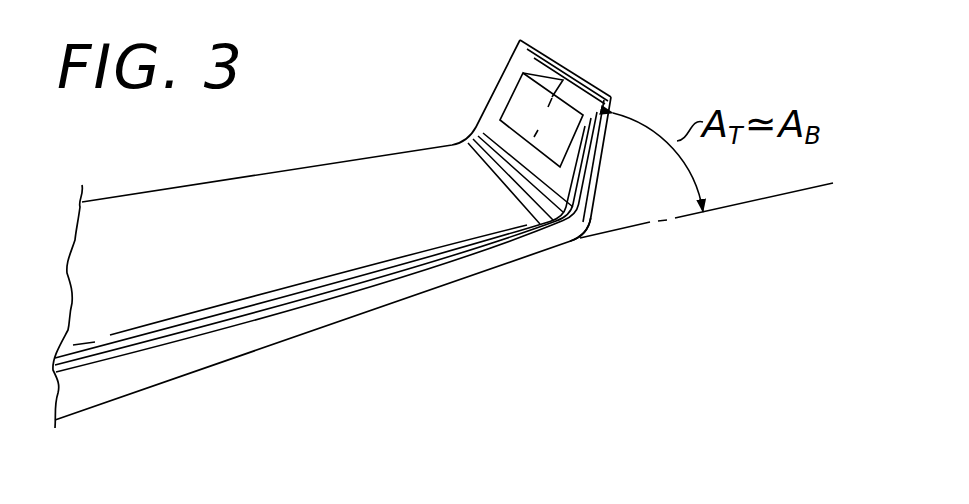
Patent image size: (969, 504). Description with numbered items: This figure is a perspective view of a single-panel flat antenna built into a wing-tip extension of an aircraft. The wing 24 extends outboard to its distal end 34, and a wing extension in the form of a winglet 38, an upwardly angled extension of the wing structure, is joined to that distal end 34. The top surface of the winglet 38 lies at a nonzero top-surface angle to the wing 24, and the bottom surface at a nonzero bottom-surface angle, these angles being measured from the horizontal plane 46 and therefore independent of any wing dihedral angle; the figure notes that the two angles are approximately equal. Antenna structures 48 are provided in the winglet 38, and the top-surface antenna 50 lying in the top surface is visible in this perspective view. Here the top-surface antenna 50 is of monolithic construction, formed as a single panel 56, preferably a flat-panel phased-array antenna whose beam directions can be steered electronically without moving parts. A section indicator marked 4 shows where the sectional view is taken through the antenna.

The wing 24 is at (182, 202).
The distal end 34 is at (591, 230).
The winglet 38 is at (619, 93).
The horizontal plane 46 is at (753, 203).
The antenna structures 48 is at (517, 100).
The top-surface antenna 50 is at (566, 115).
The single panel 56 is at (514, 126).
The section line 4- 4 is at (518, 46).